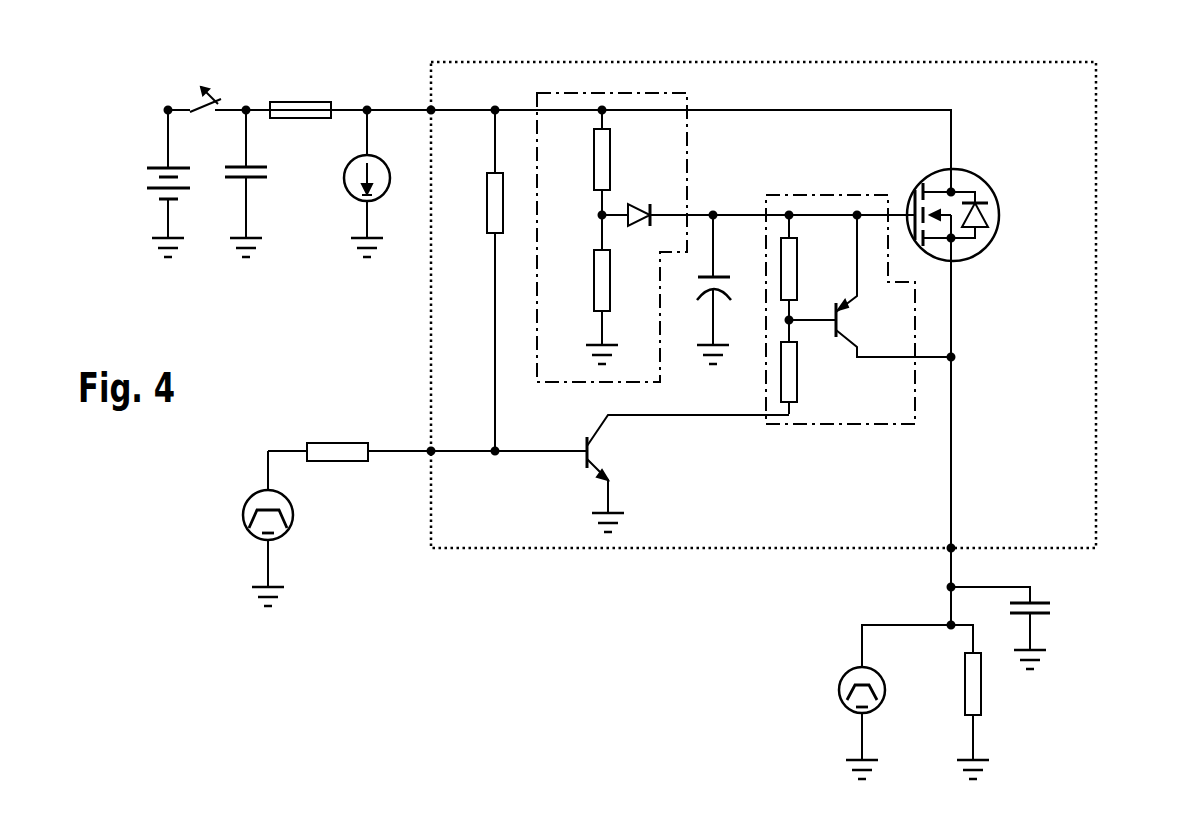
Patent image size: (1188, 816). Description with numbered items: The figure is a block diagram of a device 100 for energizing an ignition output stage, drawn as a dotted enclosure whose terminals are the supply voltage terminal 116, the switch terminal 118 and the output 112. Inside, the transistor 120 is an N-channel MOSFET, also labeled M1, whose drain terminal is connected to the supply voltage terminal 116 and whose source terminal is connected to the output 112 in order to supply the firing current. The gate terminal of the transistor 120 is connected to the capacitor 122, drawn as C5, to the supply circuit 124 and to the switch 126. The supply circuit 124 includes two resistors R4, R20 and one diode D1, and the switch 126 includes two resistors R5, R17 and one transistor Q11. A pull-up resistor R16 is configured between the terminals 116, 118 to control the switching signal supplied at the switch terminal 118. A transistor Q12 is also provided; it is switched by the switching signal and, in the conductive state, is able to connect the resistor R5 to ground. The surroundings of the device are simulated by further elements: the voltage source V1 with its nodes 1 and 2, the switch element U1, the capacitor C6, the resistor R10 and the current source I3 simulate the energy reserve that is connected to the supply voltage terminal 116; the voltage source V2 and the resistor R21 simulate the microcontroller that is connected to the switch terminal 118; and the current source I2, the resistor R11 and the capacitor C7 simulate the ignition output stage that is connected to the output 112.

The node 1 (battery side of switch) 1 is at (176, 97).
The node 2 (supply side of switch) 2 is at (246, 97).
The device 100 is at (1098, 107).
The output 112 is at (955, 546).
The supply voltage terminal 116 is at (429, 108).
The switch terminal 118 is at (429, 453).
The transistor 120 is at (984, 254).
The capacitor 122 is at (711, 268).
The supply circuit 124 is at (592, 92).
The switch 126 is at (827, 195).
The voltage source V1 is at (160, 188).
The switch element U1 is at (210, 108).
The capacitor C6 is at (262, 179).
The resistor R10 is at (308, 110).
The current source I3 is at (377, 166).
The pull-up resistor R16 is at (492, 200).
The resistor R4 is at (602, 152).
The resistor R20 is at (602, 268).
The diode D1 is at (633, 203).
The capacitor C5 is at (702, 279).
The resistor R17 is at (790, 273).
The resistor R5 is at (790, 372).
The transistor Q11 is at (841, 325).
The transistor M1 is at (967, 248).
The resistor R21 is at (337, 452).
The voltage source V2 is at (250, 512).
The transistor Q12 is at (598, 457).
The capacitor C7 is at (1040, 603).
The current source I2 is at (878, 683).
The resistor R11 is at (975, 690).